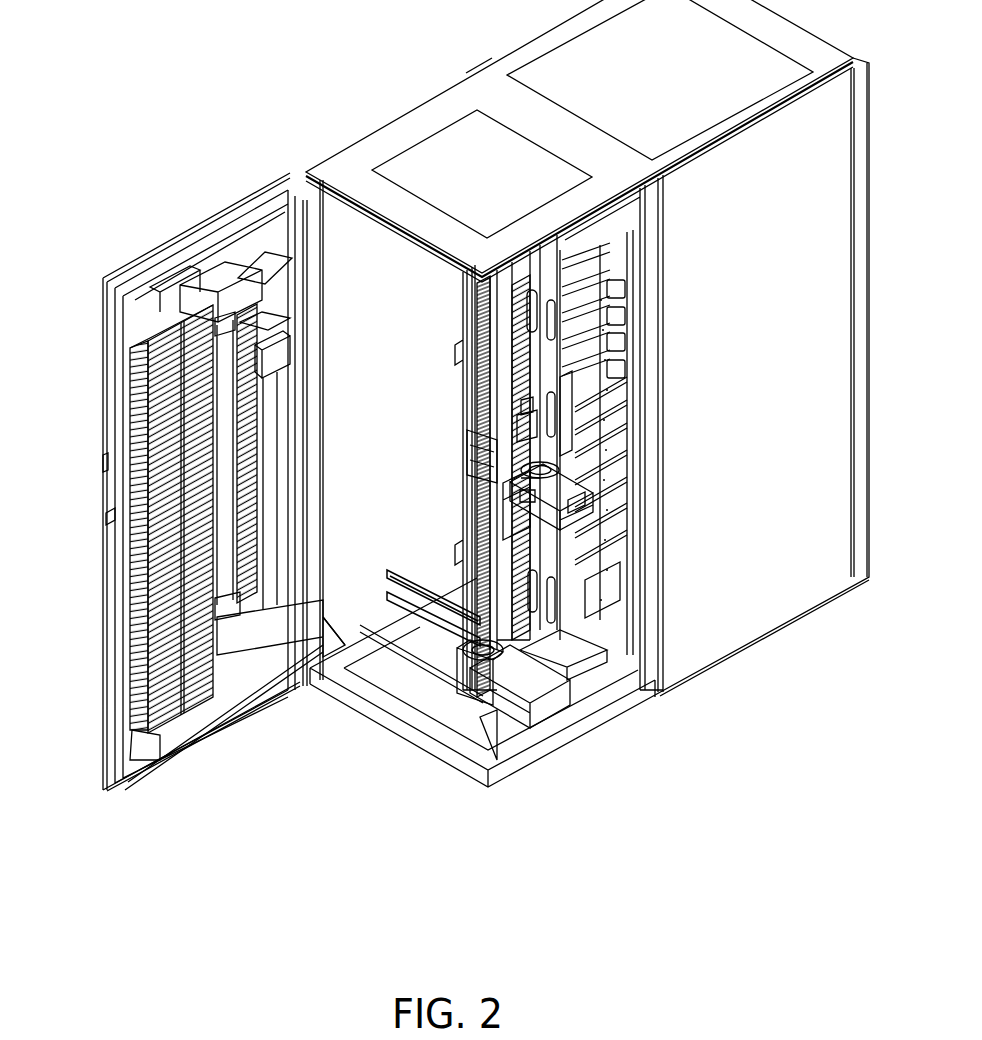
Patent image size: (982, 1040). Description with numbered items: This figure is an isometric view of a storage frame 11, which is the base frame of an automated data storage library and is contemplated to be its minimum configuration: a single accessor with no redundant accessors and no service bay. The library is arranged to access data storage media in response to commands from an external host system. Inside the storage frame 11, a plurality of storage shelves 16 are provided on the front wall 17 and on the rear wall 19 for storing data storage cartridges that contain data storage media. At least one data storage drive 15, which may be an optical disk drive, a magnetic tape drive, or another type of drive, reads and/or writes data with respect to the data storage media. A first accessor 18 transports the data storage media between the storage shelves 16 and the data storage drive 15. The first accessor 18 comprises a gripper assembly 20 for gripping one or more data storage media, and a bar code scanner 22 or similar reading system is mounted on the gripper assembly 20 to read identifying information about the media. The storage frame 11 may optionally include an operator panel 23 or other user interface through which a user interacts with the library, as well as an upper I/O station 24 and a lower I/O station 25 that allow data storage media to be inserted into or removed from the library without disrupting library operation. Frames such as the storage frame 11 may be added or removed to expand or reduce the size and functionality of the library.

The storage frame 11 is at (451, 436).
The data storage drive 15 is at (617, 270).
The storage shelves 16 is at (125, 604).
The front wall 17 is at (105, 457).
The first accessor 18 is at (523, 700).
The rear wall 19 is at (462, 313).
The gripper assembly 20 is at (607, 487).
The bar code scanner 22 is at (498, 518).
The operator panel 23 is at (278, 288).
The upper I/O station 24 is at (263, 322).
The lower I/O station 25 is at (258, 513).